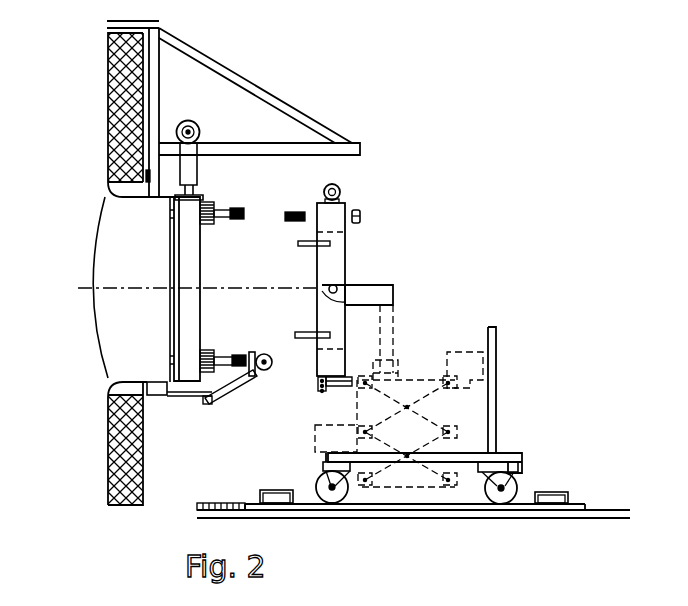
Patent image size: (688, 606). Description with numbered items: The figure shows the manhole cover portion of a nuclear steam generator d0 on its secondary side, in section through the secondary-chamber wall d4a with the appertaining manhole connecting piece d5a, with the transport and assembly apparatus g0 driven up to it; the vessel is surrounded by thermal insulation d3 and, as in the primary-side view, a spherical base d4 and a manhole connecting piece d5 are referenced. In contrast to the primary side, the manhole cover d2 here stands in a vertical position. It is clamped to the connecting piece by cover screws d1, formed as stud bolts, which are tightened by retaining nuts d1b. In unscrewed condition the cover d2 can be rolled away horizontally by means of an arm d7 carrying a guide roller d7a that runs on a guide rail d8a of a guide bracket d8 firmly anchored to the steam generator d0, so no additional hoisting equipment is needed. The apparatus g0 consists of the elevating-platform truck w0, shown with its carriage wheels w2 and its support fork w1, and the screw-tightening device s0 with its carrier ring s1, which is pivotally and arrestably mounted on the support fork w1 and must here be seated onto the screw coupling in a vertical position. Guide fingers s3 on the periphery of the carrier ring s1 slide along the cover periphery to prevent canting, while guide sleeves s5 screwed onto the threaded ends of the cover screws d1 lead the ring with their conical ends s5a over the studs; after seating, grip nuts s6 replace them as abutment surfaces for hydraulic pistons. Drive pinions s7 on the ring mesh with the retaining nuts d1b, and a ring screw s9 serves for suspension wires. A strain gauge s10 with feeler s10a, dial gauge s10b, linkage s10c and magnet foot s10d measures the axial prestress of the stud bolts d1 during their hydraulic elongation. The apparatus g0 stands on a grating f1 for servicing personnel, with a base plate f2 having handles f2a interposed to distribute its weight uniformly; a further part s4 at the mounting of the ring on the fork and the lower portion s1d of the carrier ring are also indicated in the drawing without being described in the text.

The steam generator d0 is at (105, 482).
The cover screws d1 is at (219, 208).
The retaining nuts d1b is at (213, 224).
The manhole cover d2 is at (188, 268).
The thermal insulation d3 is at (130, 53).
The spherical base d4 is at (92, 462).
The secondary-chamber wall d4a is at (97, 92).
The manhole connecting piece d5 is at (137, 364).
The manhole connecting piece (secondary side) d5a is at (148, 227).
The arm d7 is at (200, 173).
The guide roller d7a is at (196, 122).
The guide bracket d8 is at (238, 75).
The guide rail d8a is at (281, 151).
The screw-tightening device s0 is at (349, 205).
The carrier ring s1 is at (346, 337).
The column lower part s1d is at (224, 316).
The guide fingers s3 is at (297, 244).
The ball joint s4 is at (328, 285).
The guide sleeves s5 is at (292, 213).
The conical ends s5a is at (308, 204).
The grip nuts s6 is at (362, 222).
The drive pinions s7 is at (325, 390).
The ring screw s9 is at (340, 191).
The strain gauge s10 is at (230, 385).
The feeler s10a is at (255, 376).
The dial gauge s10b is at (265, 356).
The linkage s10c is at (211, 406).
The foot s10d is at (162, 396).
The elevating-platform truck w0 is at (540, 448).
The support fork w1 is at (384, 292).
The carriage wheels w2 is at (334, 503).
The grating f1 is at (233, 503).
The base plate f2 is at (440, 512).
The handles f2a is at (280, 481).
The transport and assembly apparatus g0 is at (365, 416).